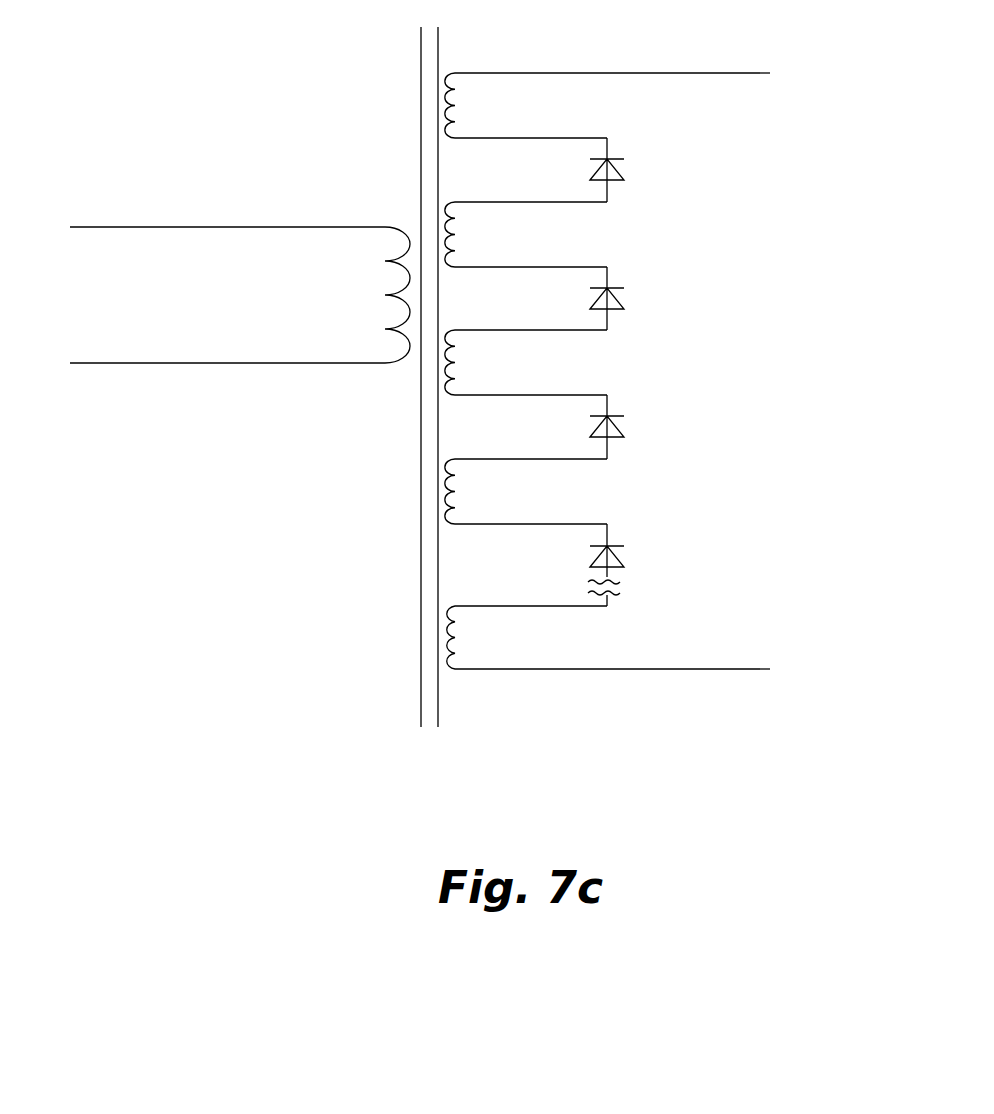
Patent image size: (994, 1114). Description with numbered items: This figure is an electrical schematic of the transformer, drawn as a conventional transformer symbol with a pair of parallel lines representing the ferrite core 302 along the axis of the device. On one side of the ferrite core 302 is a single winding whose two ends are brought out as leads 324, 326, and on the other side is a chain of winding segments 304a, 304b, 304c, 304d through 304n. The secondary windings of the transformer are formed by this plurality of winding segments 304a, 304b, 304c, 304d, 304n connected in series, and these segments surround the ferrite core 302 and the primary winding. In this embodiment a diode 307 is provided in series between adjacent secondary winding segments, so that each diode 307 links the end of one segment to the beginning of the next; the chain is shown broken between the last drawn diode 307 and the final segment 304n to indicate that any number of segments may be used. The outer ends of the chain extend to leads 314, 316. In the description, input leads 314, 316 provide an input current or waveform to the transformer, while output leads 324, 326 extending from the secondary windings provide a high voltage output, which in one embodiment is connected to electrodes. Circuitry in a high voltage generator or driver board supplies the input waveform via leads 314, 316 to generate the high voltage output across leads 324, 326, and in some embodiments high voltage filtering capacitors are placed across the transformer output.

The ferrite core 302 is at (438, 45).
The first secondary winding segment 304a is at (519, 53).
The second secondary winding segment 304b is at (611, 231).
The secondary winding segment 304c is at (611, 364).
The secondary winding segment 304d is at (611, 477).
The last secondary winding segment 304n is at (483, 684).
The diode 307 is at (614, 158).
The input lead 314 is at (753, 72).
The input lead 316 is at (721, 668).
The output lead 324 is at (105, 226).
The output lead 326 is at (120, 364).